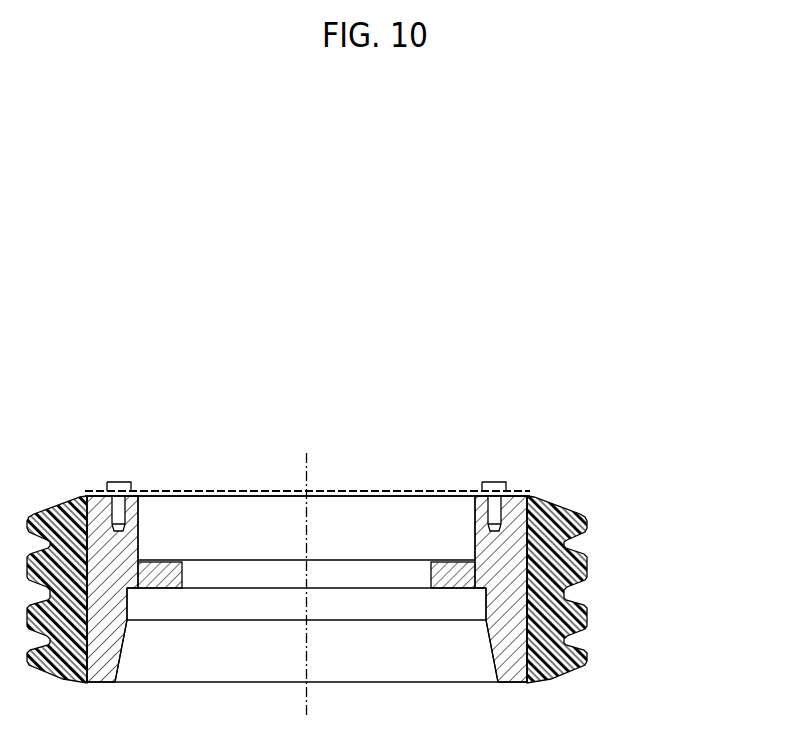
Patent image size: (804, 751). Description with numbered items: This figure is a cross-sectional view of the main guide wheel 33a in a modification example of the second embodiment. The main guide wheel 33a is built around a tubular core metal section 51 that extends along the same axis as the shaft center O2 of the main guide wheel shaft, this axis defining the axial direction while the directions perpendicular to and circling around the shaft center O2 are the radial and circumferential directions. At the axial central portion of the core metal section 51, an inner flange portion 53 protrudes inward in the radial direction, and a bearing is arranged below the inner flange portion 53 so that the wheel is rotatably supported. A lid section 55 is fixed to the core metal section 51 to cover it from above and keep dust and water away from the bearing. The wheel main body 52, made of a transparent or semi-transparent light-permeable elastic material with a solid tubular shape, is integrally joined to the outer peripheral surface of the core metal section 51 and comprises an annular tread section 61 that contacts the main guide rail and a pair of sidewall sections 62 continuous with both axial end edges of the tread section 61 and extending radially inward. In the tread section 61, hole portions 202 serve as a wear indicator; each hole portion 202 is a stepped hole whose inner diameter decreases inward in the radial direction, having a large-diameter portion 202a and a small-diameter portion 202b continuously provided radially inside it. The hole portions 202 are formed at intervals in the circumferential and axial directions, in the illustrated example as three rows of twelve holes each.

The main guide wheel 33a is at (498, 427).
The core metal section 51 is at (515, 667).
The wheel main body 52 is at (400, 560).
The inner flange portion 53 is at (455, 570).
The lid section 55 is at (398, 491).
The tread section 61 is at (346, 560).
The sidewall section 62 is at (541, 500).
The hole portion 202 is at (400, 560).
The large-diameter portion 202a is at (585, 637).
The small-diameter portion 202b is at (567, 633).
The shaft center O2 is at (312, 463).